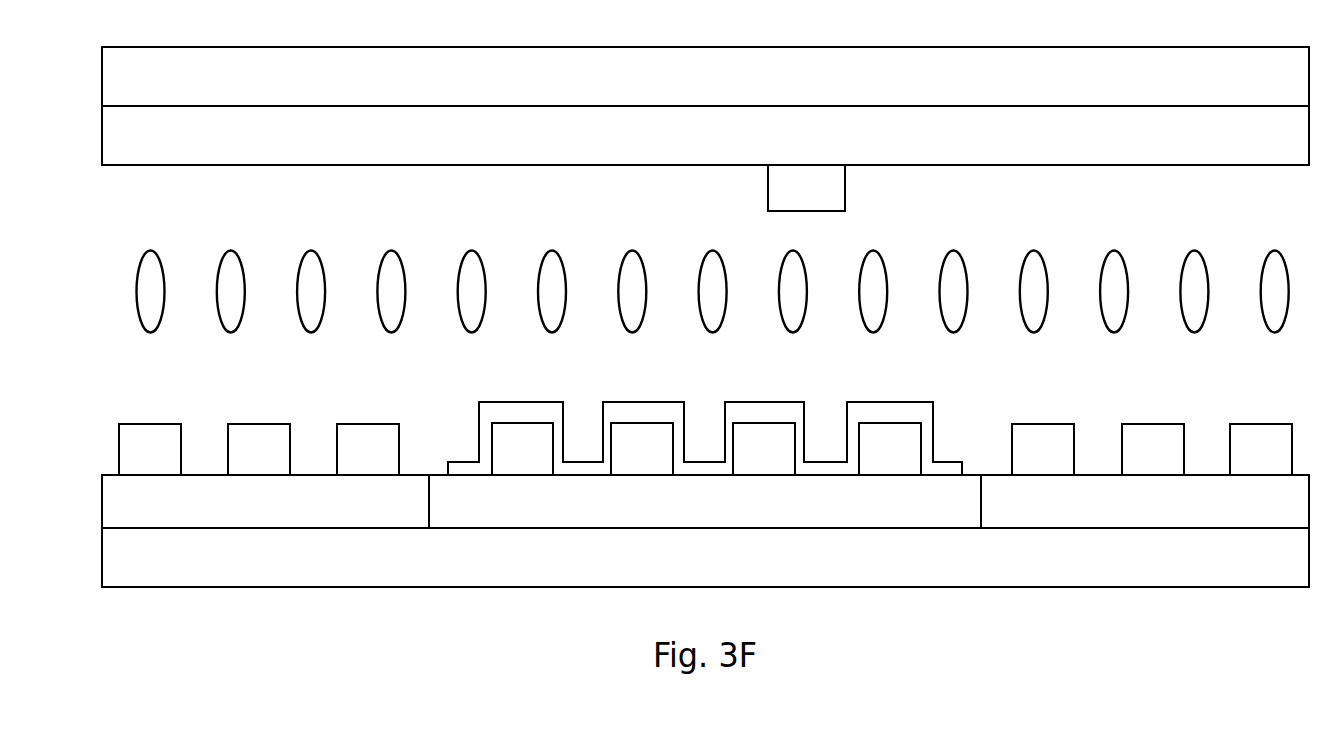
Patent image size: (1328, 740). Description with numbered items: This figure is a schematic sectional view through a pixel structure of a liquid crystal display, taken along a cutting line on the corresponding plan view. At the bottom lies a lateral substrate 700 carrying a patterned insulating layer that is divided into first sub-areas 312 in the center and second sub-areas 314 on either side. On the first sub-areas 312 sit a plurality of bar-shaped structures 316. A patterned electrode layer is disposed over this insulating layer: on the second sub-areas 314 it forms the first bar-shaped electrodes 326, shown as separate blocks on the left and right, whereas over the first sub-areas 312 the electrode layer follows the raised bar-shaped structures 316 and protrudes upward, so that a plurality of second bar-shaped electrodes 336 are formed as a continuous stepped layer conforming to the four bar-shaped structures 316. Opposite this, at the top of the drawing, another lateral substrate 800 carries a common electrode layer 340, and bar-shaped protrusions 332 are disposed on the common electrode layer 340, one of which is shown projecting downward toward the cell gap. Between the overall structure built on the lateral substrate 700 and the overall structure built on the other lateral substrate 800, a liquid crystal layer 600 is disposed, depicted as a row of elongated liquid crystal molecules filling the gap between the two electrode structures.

The another lateral substrate 800 is at (686, 87).
The common electrode layer 340 is at (686, 146).
The bar-shaped protrusions 332 is at (787, 200).
The liquid crystal layer 600 is at (1274, 262).
The second bar-shaped electrodes 336 is at (519, 403).
The bar-shaped structures 316 is at (504, 460).
The first bar-shaped electrodes 326 is at (131, 465).
The second sub-areas 314 is at (234, 513).
The first sub-areas 312 is at (686, 513).
The lateral substrate 700 is at (686, 567).